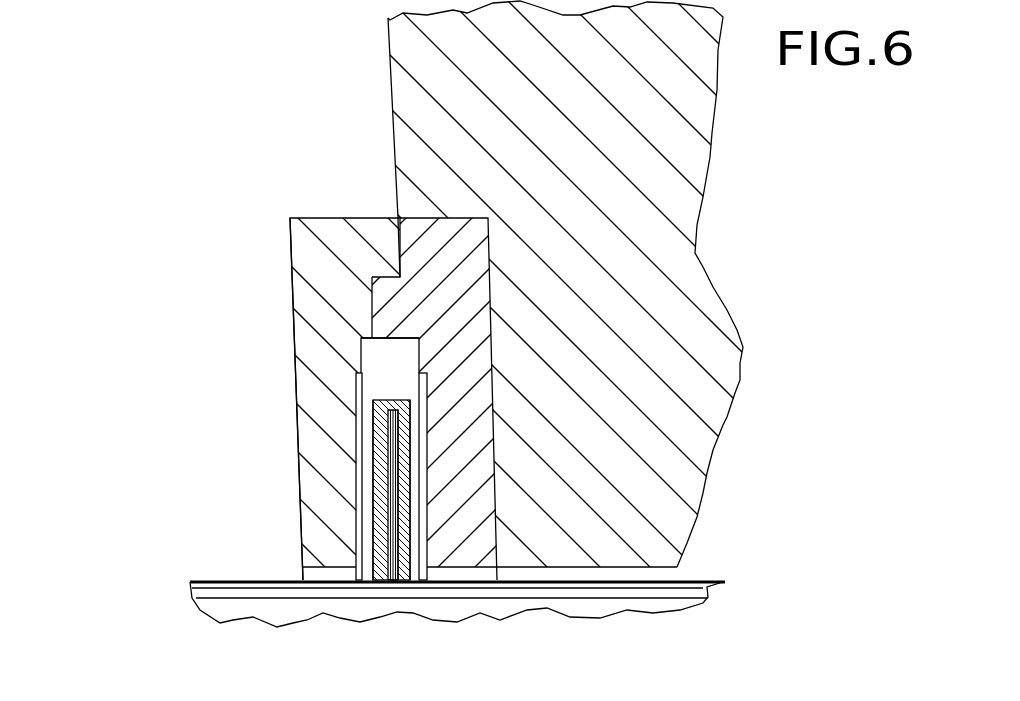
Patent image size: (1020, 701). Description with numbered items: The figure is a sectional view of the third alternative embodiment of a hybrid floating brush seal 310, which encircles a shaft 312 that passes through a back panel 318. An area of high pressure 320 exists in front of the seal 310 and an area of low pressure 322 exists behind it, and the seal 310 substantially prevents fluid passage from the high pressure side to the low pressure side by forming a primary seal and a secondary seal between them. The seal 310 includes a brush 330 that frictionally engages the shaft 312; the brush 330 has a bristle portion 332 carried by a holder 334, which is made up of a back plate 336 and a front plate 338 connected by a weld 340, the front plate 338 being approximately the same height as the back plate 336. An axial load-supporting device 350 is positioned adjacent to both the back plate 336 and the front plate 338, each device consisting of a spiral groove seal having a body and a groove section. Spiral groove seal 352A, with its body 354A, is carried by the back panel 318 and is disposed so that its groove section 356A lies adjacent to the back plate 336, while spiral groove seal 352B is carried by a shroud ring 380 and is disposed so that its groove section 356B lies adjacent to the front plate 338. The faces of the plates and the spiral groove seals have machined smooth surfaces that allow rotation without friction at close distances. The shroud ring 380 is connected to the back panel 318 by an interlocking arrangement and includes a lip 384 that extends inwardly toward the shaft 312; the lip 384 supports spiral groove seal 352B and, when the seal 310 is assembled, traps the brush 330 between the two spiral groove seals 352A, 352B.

The hybrid floating brush seal 310 is at (163, 499).
The shaft 312 is at (194, 584).
The back panel 318 is at (692, 160).
The area of high pressure 320 is at (105, 270).
The area of low pressure 322 is at (678, 572).
The brush 330 is at (388, 358).
The bristle portion 332 is at (398, 582).
The holder 334 is at (380, 394).
The back plate 336 is at (407, 520).
The front plate 338 is at (389, 550).
The weld 340 is at (373, 410).
The axial load-supporting device 350 is at (336, 328).
The spiral groove seal 352A is at (503, 295).
The spiral groove seal 352B is at (340, 452).
The body 354A is at (482, 357).
The groove section 356A is at (442, 482).
The groove section 356B is at (343, 492).
The shroud ring 380 is at (309, 218).
The lip 384 is at (291, 340).